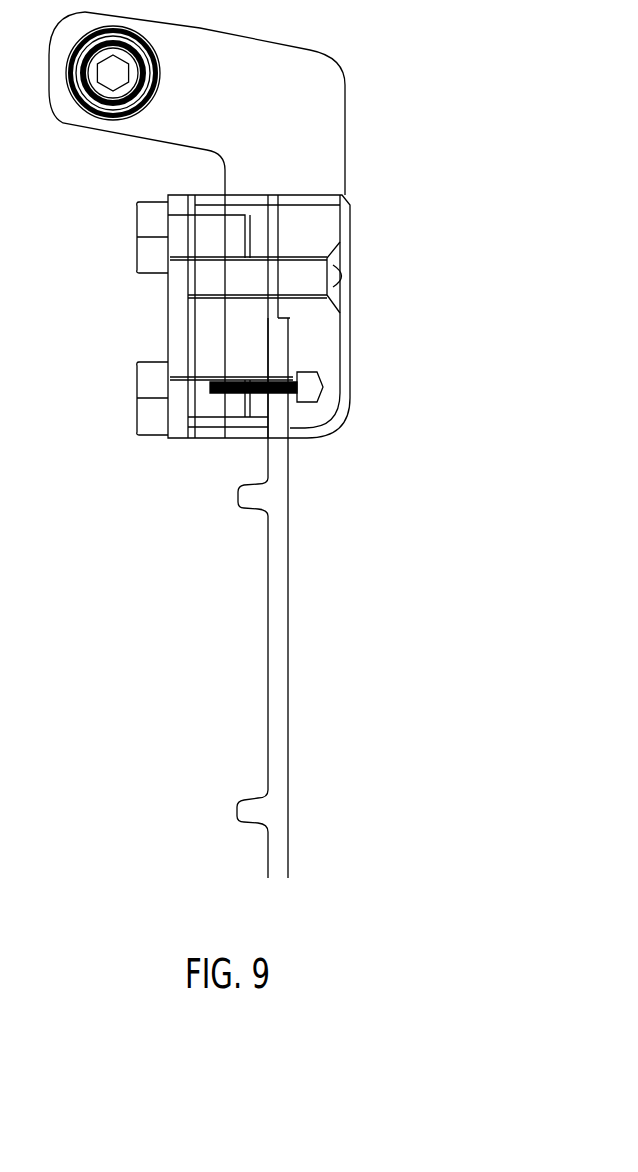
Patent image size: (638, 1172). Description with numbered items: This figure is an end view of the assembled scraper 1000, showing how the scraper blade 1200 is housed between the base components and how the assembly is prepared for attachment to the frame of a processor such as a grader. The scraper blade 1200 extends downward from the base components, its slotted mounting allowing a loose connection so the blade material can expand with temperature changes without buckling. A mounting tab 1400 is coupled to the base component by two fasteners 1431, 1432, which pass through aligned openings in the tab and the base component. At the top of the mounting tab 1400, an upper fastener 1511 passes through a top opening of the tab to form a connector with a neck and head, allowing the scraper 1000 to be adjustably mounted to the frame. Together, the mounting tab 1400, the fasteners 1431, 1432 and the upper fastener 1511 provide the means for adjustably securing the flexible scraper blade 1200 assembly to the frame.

The mounting tab 1400 is at (345, 125).
The upper fastener 1511 is at (104, 92).
The scraper 1000 is at (403, 255).
The fastener 1431 is at (143, 266).
The fastener 1432 is at (143, 428).
The scraper blade 1200 is at (288, 558).